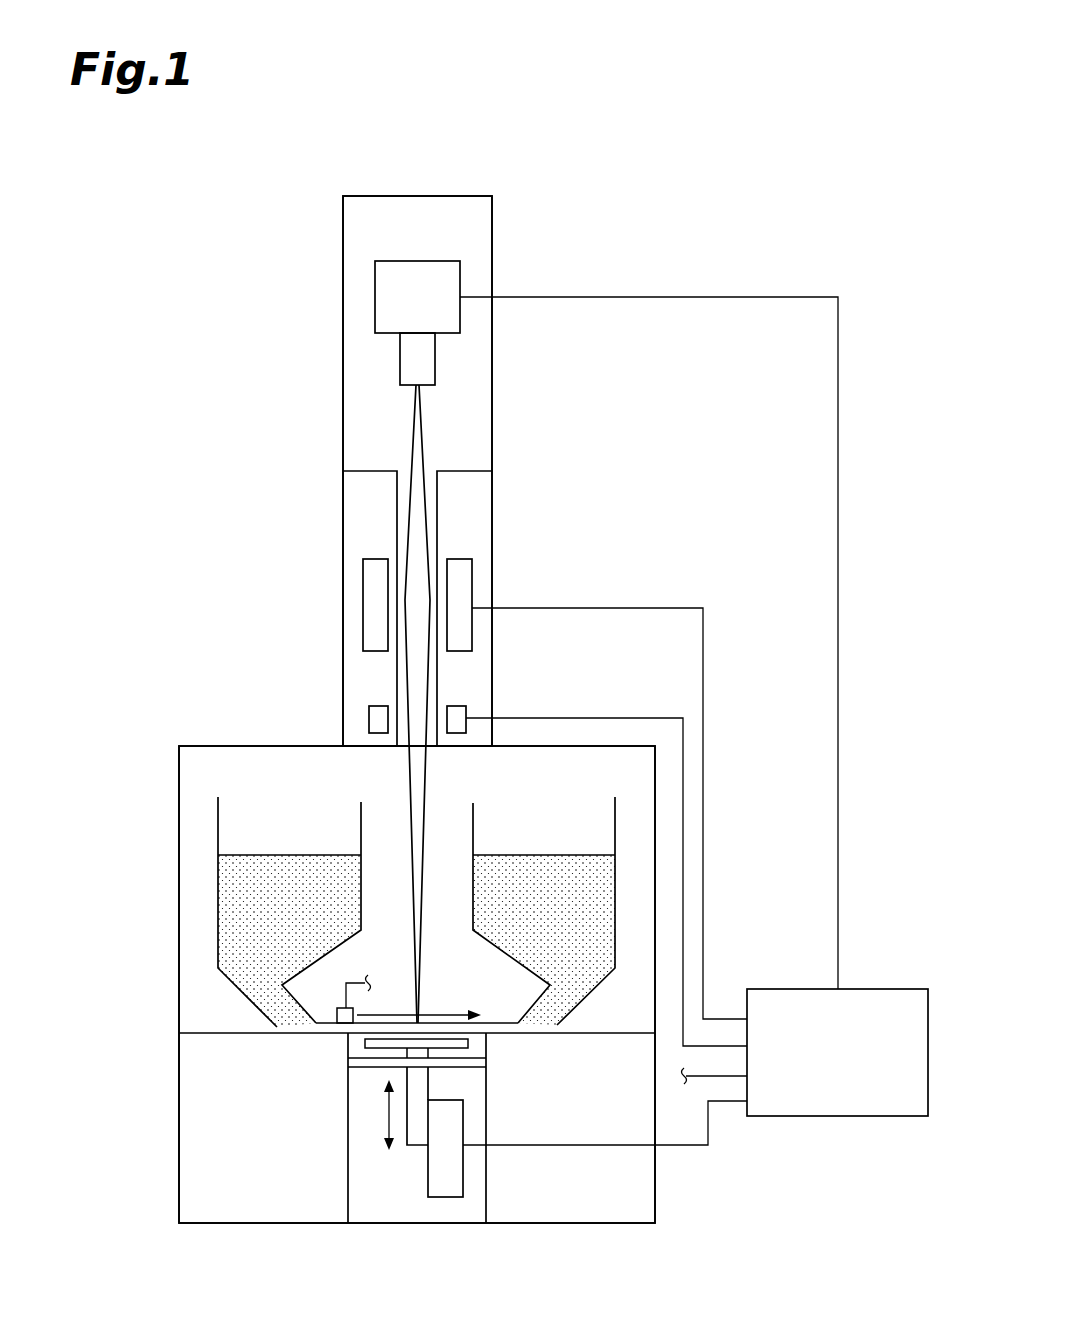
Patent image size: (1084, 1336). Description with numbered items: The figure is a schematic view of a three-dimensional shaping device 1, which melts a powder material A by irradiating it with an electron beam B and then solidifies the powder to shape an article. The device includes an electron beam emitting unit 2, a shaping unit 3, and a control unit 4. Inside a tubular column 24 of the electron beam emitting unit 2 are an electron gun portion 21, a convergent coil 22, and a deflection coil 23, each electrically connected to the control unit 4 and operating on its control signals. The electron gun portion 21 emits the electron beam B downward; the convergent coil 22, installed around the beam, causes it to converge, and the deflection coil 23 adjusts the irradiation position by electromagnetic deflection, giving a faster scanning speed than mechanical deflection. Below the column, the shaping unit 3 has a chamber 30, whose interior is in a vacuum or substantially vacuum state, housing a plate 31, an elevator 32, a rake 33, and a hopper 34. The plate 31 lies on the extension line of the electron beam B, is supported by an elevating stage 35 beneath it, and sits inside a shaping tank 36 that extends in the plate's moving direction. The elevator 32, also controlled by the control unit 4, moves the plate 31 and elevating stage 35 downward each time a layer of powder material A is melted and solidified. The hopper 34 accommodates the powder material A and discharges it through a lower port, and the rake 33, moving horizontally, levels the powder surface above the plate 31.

The three-dimensional shaping device 1 is at (707, 152).
The electron beam emitting unit 2 is at (343, 213).
The electron gun portion 21 is at (375, 292).
The convergent coil 22 is at (473, 575).
The deflection coil 23 is at (466, 712).
The column 24 is at (343, 250).
The shaping unit 3 is at (179, 768).
The chamber 30 is at (179, 896).
The plate 31 is at (350, 1042).
The elevator 32 is at (463, 1167).
The rake 33 is at (335, 1003).
The hopper 34 is at (218, 823).
The elevating stage 35 is at (357, 1070).
The shaping tank 36 is at (486, 1093).
The control unit 4 is at (878, 989).
The powder material A is at (482, 1033).
The electron beam B is at (408, 790).